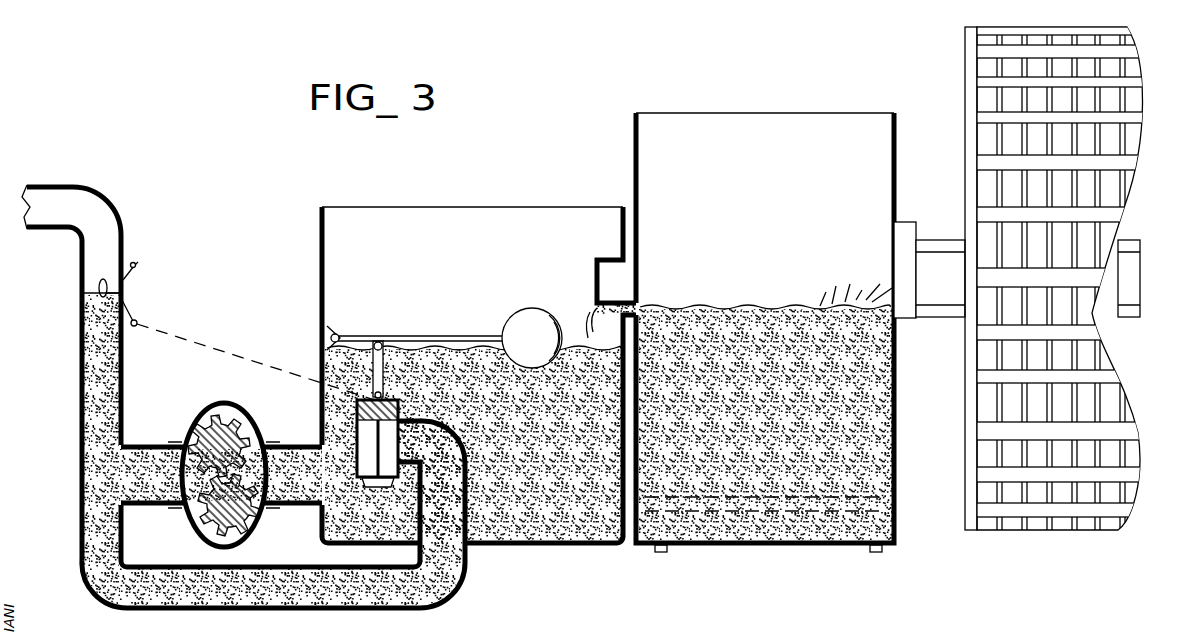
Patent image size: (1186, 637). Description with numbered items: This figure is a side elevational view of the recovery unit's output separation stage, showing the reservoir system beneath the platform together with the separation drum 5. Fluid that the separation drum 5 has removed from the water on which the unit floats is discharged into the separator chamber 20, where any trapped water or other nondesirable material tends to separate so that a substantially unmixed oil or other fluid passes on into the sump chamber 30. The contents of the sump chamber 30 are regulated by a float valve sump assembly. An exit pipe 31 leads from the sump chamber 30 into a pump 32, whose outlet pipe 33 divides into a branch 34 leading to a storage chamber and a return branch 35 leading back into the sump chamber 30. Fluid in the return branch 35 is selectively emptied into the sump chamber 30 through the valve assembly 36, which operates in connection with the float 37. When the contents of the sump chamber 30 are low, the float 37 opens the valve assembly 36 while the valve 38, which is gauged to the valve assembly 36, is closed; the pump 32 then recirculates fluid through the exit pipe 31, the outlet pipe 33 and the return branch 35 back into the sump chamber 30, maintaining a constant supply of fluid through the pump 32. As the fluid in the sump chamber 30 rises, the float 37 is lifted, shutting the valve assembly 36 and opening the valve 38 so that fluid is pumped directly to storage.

The separation drum 5 is at (988, 506).
The separator chamber 20 is at (740, 546).
The sump chamber 30 is at (520, 546).
The exit pipe 31 is at (300, 506).
The pump 32 is at (262, 442).
The outlet pipe 33 is at (150, 506).
The branch 34 is at (123, 396).
The return branch 35 is at (80, 540).
The valve assembly 36 is at (398, 410).
The float 37 is at (432, 336).
The valve 38 is at (112, 290).